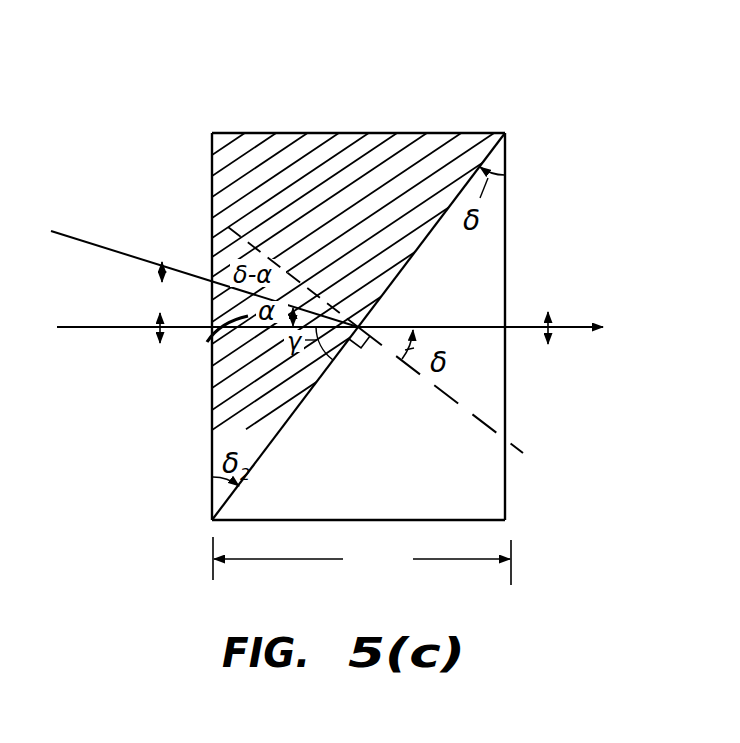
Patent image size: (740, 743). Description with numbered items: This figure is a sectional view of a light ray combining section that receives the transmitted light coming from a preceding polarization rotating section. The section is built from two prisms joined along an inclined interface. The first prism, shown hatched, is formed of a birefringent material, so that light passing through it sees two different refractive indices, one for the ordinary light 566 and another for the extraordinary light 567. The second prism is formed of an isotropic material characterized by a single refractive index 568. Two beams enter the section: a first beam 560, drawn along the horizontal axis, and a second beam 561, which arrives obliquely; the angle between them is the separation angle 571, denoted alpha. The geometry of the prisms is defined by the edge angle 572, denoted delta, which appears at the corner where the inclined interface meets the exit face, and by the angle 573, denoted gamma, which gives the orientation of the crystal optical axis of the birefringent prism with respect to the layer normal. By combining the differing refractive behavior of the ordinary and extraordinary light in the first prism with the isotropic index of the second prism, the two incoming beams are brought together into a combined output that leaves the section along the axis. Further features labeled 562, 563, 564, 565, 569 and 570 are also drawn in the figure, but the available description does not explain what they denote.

The first beam 560 is at (79, 329).
The second beam 561 is at (80, 238).
The beam displacement on axis 562 is at (158, 330).
The beam displacement at incident ray 563 is at (166, 257).
The exit optical axis 564 is at (585, 325).
The exit beam displacement 565 is at (553, 333).
The ordinary light 566 is at (358, 215).
The extraordinary light 567 is at (378, 165).
The refractive index 568 is at (456, 486).
The prism width d3 569 is at (362, 569).
The top face of prism 570 is at (437, 147).
The separation angle 571 is at (211, 338).
The edge angle 572 is at (488, 242).
The angle of the optical axis 573 is at (298, 364).